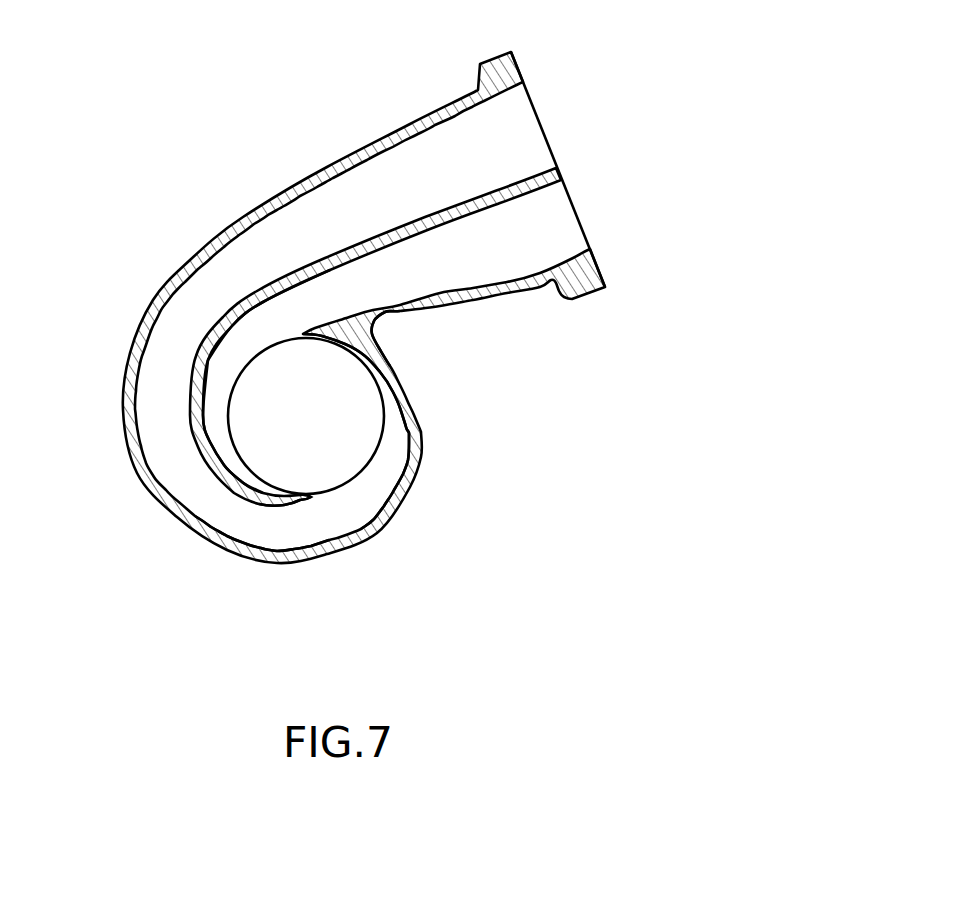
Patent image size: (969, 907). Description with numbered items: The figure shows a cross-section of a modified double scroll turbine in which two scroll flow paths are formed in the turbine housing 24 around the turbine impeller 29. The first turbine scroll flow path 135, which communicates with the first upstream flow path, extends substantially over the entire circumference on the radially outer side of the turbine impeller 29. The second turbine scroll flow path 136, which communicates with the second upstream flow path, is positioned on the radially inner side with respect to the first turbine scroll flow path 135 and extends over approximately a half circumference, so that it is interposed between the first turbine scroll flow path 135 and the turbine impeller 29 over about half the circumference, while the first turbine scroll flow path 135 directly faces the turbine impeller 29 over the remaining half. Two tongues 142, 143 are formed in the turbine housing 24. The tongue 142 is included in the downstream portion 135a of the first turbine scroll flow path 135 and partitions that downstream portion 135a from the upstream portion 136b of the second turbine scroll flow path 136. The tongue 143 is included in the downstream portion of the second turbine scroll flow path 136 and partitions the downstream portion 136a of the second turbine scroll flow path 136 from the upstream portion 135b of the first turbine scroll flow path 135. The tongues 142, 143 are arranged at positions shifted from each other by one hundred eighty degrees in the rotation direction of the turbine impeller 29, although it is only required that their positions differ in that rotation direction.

The turbine housing 24 is at (327, 168).
The turbine impeller 29 is at (345, 478).
The first turbine scroll flow path 135 is at (396, 437).
The downstream portion of the first turbine scroll flow path 135a is at (368, 355).
The upstream portion of the first turbine scroll flow path 135b is at (306, 520).
The second turbine scroll flow path 136 is at (210, 393).
The downstream portion of the second turbine scroll flow path 136a is at (248, 478).
The upstream portion of the second turbine scroll flow path 136b is at (266, 318).
The tongue 142 is at (302, 336).
The tongue 143 is at (308, 497).